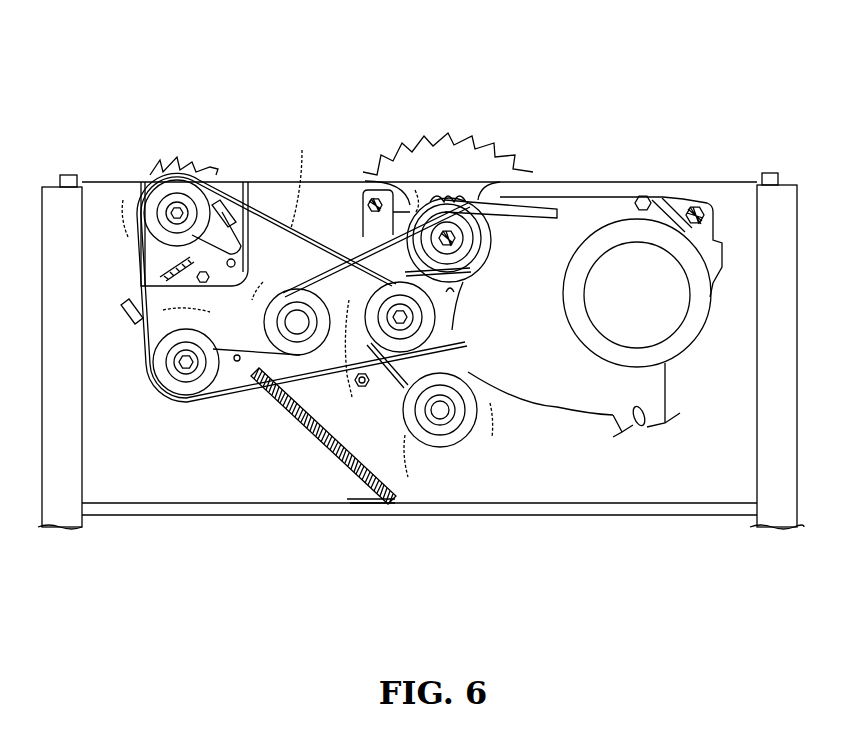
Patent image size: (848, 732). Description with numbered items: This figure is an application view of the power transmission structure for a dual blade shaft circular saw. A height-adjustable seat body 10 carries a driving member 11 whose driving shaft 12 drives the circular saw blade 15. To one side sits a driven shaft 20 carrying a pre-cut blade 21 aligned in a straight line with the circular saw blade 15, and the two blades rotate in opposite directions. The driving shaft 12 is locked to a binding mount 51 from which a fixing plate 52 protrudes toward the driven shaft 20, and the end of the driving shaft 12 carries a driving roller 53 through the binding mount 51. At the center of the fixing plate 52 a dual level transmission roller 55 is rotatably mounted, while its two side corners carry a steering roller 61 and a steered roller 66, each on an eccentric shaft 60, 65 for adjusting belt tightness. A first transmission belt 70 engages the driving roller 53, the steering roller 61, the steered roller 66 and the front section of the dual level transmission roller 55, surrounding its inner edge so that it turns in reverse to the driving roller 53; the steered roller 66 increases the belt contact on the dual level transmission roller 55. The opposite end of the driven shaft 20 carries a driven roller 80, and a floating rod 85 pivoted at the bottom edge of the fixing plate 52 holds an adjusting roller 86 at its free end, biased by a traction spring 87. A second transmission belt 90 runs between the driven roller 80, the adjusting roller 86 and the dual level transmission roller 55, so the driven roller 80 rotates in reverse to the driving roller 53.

The seat body 10 is at (613, 208).
The driving member 11 is at (651, 252).
The driving shaft 12 is at (422, 200).
The circular saw blade 15 is at (452, 140).
The driven shaft 20 is at (158, 182).
The pre-cut blade 21 is at (173, 163).
The binding mount 51 is at (528, 205).
The fixing plate 52 is at (462, 347).
The driving roller 53 is at (405, 228).
The dual level transmission roller 55 is at (462, 281).
The eccentric shaft 60 is at (313, 375).
The steering roller 61 is at (335, 360).
The eccentric shaft 65 is at (403, 425).
The steered roller 66 is at (457, 430).
The first transmission belt 70 is at (354, 235).
The driven roller 80 is at (200, 198).
The floating rod 85 is at (233, 372).
The adjusting roller 86 is at (178, 383).
The traction spring 87 is at (340, 462).
The second transmission belt 90 is at (276, 220).